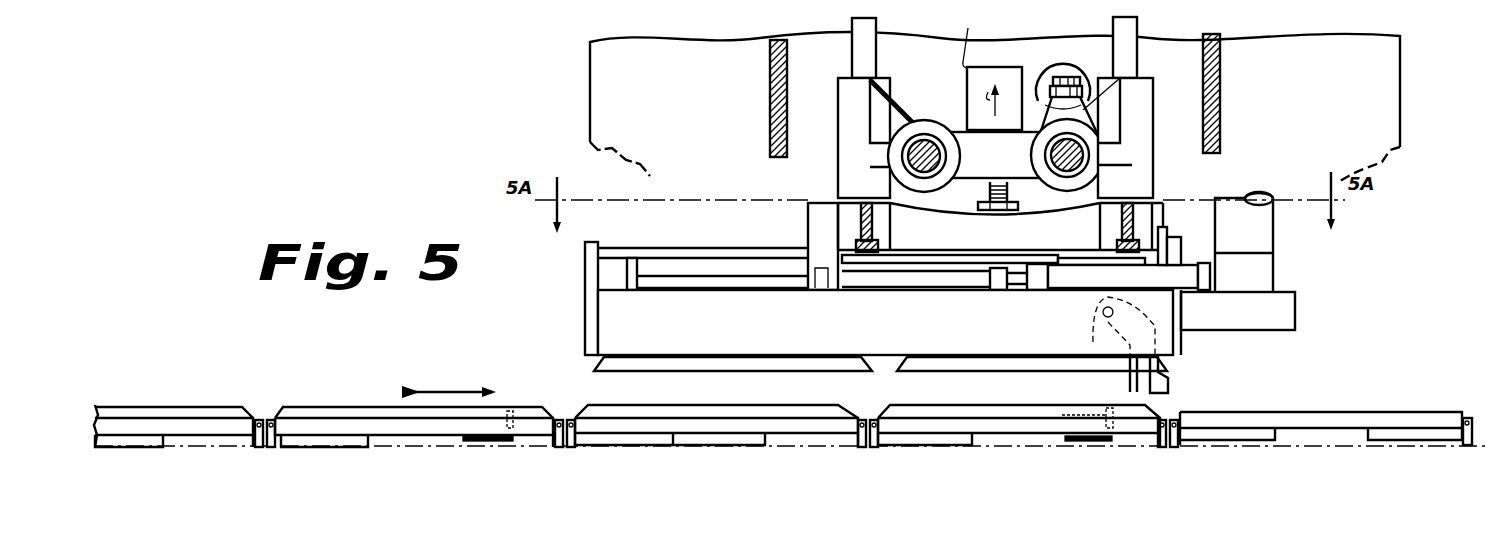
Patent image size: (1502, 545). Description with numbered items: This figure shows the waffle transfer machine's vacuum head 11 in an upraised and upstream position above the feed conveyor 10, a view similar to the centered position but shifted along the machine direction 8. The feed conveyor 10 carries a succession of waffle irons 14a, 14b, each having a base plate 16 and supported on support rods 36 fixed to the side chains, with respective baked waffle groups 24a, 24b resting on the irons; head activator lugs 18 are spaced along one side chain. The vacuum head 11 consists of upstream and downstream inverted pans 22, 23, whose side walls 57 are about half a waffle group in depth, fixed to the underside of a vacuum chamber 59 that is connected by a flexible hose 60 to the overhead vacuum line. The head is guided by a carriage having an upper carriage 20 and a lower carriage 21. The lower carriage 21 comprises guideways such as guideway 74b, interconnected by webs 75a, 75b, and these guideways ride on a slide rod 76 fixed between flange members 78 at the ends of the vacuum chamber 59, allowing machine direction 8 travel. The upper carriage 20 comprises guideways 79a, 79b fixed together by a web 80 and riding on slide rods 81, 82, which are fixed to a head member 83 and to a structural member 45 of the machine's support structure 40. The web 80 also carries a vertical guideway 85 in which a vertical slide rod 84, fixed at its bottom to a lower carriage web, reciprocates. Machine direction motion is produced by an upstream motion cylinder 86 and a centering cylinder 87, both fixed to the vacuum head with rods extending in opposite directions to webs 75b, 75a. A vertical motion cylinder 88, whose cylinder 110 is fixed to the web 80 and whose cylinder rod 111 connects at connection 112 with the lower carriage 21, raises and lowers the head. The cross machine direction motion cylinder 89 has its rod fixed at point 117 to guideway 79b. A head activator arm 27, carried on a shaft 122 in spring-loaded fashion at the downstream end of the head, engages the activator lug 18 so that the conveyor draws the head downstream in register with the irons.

The machine direction 8 is at (459, 390).
The feed conveyor 10 is at (521, 8).
The vacuum head 11 is at (590, 328).
The waffle iron 14a is at (578, 0).
The waffle iron 14b is at (906, 0).
The base plate 16 is at (171, 0).
The head activator lug 18 is at (1106, 409).
The upper carriage 20 is at (1192, 63).
The lower carriage 21 is at (1165, 196).
The inverted pan 22 is at (752, 364).
The inverted pan 23 is at (994, 367).
The waffle group 24a is at (762, 405).
The waffle group 24b is at (1045, 392).
The head activator arm 27 is at (1158, 379).
The support rod 36 is at (224, 0).
The support structure 40 is at (1402, 92).
The structural member 45 is at (1400, 131).
The side wall 57 is at (683, 362).
The vacuum chamber 59 is at (889, 322).
The flexible hose 60 is at (1263, 233).
The guideway 74b is at (1168, 232).
The web 75a is at (873, 224).
The web 75b is at (1120, 219).
The slide rod 76 is at (693, 231).
The flange member 78 is at (598, 246).
The guideway 79a is at (952, 112).
The guideway 79b is at (1031, 152).
The web 80 is at (956, 186).
The slide rod 81 is at (917, 148).
The slide rod 82 is at (1073, 150).
The head member 83 is at (890, 97).
The slide rod 84 is at (1137, 23).
The guideway 85 is at (1143, 113).
The upstream motion cylinder 86 is at (704, 279).
The centering cylinder 87 is at (1082, 281).
The vertical motion cylinder 88 is at (1010, 47).
The cross machine direction motion cylinder 89 is at (1088, 48).
The cylinder 110 is at (971, 38).
The cylinder rod 111 is at (1004, 193).
The connection 112 is at (1001, 211).
The fixing point 117 is at (1101, 80).
The shaft 122 is at (1093, 331).